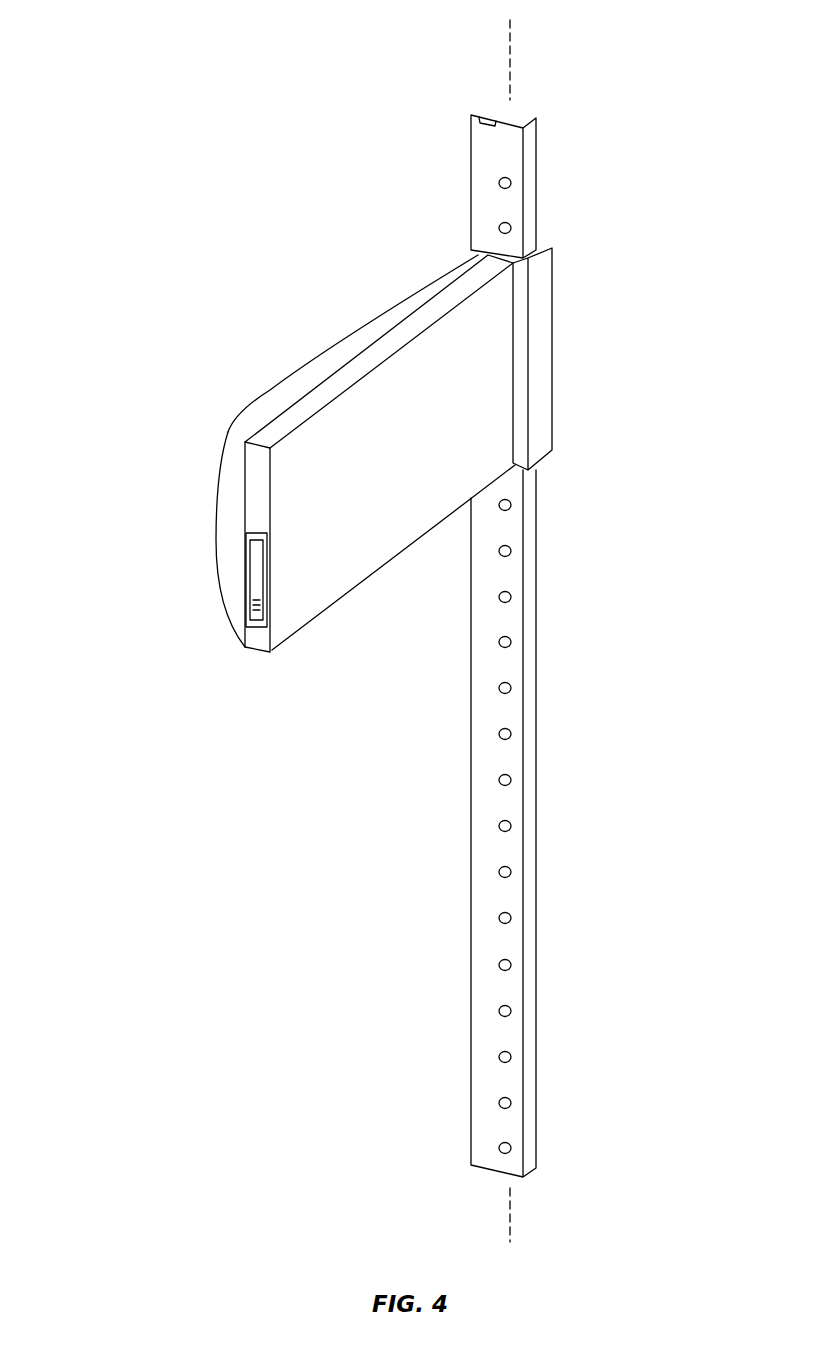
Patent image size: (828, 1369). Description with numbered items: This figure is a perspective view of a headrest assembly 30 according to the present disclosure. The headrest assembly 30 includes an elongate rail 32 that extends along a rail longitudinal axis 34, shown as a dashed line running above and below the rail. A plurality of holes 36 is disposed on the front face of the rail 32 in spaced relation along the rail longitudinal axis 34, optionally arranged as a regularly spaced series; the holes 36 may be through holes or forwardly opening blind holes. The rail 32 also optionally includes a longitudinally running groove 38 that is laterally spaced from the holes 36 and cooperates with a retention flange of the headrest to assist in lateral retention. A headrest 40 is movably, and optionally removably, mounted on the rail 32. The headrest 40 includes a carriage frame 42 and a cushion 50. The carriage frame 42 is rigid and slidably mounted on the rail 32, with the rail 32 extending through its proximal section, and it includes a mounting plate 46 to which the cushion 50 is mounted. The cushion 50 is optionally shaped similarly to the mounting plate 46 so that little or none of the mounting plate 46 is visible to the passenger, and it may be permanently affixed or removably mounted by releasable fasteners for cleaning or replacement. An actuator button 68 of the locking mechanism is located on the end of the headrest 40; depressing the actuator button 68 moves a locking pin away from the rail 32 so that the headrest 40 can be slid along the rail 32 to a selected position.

The headrest assembly 30 is at (292, 267).
The rail 32 is at (528, 922).
The rail longitudinal axis 34 is at (512, 62).
The holes 36 is at (511, 690).
The groove 38 is at (493, 110).
The headrest 40 is at (305, 466).
The carriage frame 42 is at (538, 332).
The mounting plate 46 is at (330, 560).
The cushion 50 is at (277, 383).
The actuator button 68 is at (257, 583).